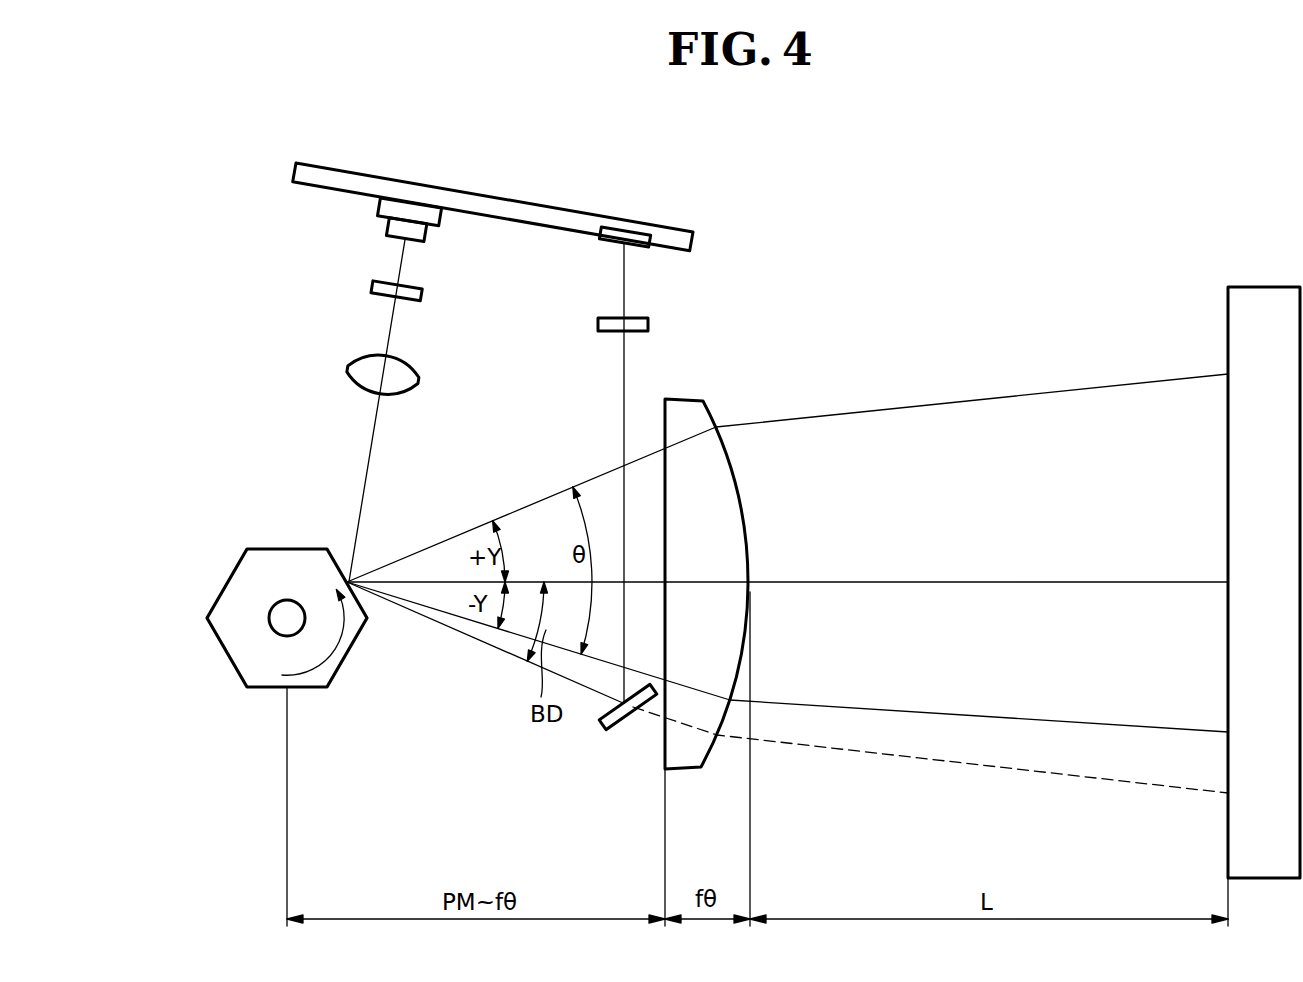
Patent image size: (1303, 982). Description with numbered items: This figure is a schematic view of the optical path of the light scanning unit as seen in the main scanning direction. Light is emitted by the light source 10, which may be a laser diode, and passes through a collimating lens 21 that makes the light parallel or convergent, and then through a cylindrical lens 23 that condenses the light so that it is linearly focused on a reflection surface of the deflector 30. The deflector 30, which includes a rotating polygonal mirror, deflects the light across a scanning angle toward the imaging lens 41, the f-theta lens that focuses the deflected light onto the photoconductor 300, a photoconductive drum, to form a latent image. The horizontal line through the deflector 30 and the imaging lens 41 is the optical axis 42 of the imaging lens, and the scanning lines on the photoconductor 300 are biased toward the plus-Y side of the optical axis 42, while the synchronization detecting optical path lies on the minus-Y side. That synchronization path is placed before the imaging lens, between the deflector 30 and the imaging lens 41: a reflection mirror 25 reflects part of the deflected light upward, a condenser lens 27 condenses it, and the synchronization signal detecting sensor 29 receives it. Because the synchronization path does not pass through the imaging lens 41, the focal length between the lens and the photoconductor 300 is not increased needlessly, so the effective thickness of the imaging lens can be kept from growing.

The light source 10 is at (388, 221).
The collimating lens 21 is at (372, 287).
The cylindrical lens 23 is at (350, 370).
The reflection mirror 25 is at (603, 726).
The condenser lens 27 is at (645, 333).
The synchronization signal detecting sensor 29 is at (638, 243).
The deflector 30 is at (212, 568).
The fθ lens 41 is at (665, 757).
The optical axis 42 is at (964, 583).
The photoconductor 300 is at (1275, 300).